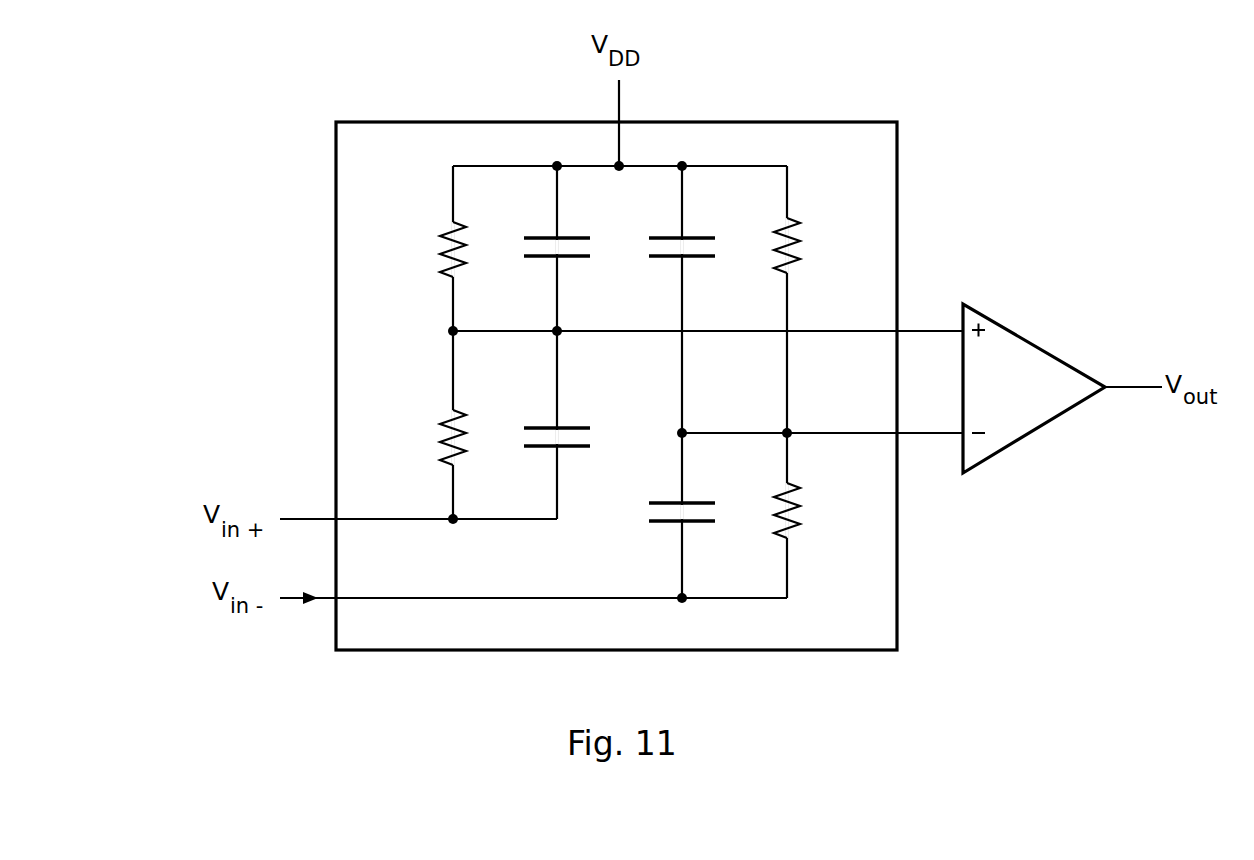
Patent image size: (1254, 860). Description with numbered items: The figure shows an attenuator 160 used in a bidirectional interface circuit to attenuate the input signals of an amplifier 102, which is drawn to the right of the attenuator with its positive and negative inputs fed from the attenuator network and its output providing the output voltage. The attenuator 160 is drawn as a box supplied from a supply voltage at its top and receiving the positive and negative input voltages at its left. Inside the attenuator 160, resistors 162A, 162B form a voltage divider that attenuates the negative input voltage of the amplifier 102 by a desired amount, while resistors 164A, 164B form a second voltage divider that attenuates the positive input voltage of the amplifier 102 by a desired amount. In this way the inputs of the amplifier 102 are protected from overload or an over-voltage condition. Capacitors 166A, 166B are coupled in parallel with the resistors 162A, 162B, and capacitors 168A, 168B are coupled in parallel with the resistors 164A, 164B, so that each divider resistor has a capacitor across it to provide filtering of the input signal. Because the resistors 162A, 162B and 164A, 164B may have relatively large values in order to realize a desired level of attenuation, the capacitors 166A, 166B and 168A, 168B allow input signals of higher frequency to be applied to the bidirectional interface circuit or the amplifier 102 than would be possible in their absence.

The attenuator 160 is at (750, 122).
The amplifier 102 is at (1035, 345).
The resistor 162A is at (830, 230).
The resistor 162B is at (830, 495).
The resistor 164A is at (442, 236).
The resistor 164B is at (443, 425).
The capacitor 166A is at (698, 237).
The capacitor 166B is at (698, 502).
The capacitor 168A is at (572, 237).
The capacitor 168B is at (572, 427).